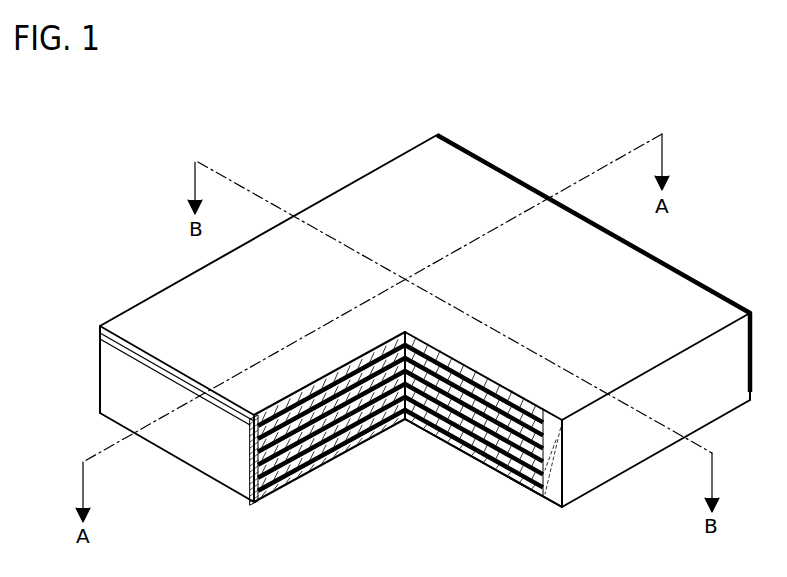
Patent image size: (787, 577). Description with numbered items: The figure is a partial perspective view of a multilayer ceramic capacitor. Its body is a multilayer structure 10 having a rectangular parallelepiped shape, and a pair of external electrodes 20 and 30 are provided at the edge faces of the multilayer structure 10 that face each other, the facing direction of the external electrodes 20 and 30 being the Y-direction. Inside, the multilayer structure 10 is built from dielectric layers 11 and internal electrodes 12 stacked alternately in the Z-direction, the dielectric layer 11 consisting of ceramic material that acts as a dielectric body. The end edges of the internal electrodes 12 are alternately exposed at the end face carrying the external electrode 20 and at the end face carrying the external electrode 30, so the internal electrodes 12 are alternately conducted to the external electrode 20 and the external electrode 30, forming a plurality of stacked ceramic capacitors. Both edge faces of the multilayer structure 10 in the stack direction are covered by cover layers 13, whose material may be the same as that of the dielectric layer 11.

The multilayer structure 10 is at (402, 325).
The dielectric layer 11 is at (337, 447).
The internal electrode 12 is at (297, 473).
The cover layer 13 is at (500, 468).
The external electrode 20 is at (100, 340).
The external electrode 30 is at (450, 140).